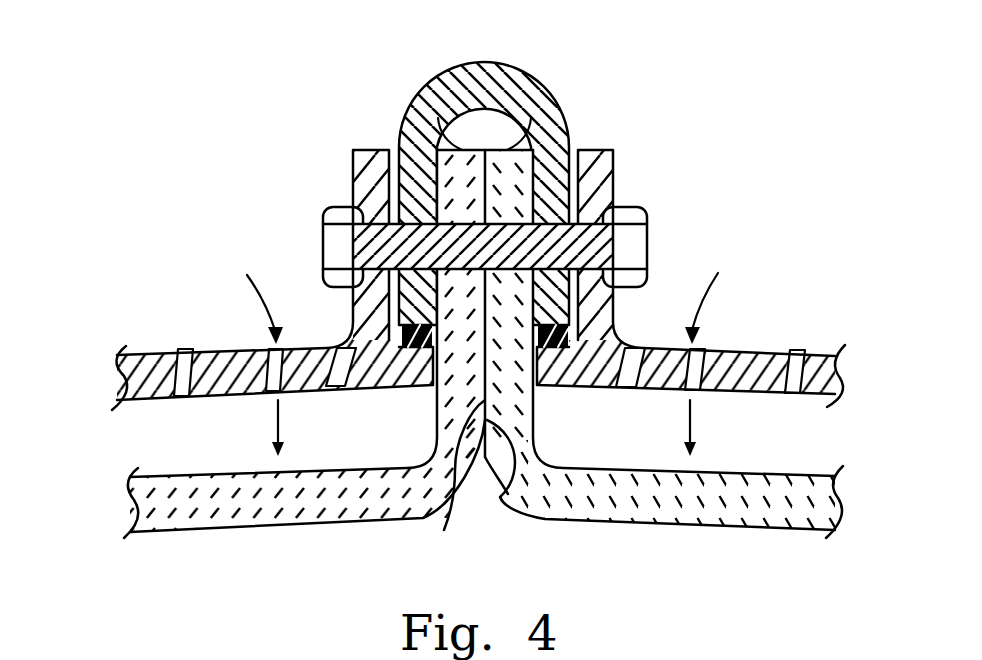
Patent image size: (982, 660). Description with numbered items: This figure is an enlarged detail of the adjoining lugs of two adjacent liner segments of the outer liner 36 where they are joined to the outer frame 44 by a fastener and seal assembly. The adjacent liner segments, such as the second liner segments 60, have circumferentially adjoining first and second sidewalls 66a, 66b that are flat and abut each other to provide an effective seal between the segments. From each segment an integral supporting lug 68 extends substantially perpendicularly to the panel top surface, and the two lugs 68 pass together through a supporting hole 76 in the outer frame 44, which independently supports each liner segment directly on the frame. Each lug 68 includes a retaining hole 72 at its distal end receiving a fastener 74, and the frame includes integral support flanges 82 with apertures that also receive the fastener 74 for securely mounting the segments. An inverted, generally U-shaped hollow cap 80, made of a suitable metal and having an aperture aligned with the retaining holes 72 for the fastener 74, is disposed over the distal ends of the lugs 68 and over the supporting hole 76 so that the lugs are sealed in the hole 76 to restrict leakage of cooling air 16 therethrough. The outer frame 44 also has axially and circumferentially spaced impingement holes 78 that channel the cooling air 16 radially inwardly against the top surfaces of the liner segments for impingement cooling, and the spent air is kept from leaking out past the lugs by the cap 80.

The cooling air 16 is at (714, 287).
The outer liner 36 is at (223, 532).
The outer frame 44 is at (220, 348).
The second liner segments 60 is at (668, 523).
The first sidewall 66a is at (304, 372).
The second sidewall 66b is at (664, 369).
The supporting lugs 68 is at (437, 88).
The retaining hole 72 is at (483, 344).
The fastener 74 is at (640, 207).
The supporting holes 76 is at (540, 385).
The impingement holes 78 is at (798, 355).
The cap 80 is at (490, 62).
The support flanges 82 is at (600, 150).